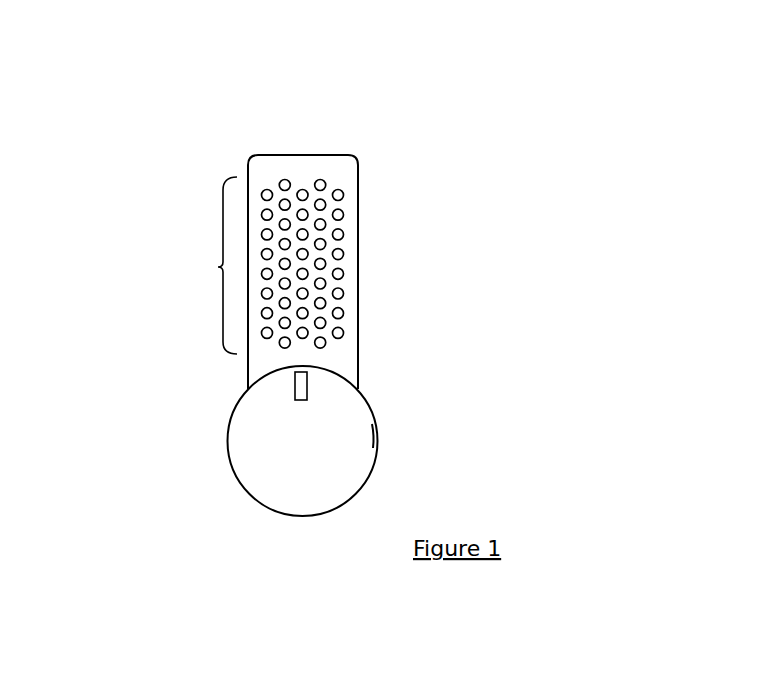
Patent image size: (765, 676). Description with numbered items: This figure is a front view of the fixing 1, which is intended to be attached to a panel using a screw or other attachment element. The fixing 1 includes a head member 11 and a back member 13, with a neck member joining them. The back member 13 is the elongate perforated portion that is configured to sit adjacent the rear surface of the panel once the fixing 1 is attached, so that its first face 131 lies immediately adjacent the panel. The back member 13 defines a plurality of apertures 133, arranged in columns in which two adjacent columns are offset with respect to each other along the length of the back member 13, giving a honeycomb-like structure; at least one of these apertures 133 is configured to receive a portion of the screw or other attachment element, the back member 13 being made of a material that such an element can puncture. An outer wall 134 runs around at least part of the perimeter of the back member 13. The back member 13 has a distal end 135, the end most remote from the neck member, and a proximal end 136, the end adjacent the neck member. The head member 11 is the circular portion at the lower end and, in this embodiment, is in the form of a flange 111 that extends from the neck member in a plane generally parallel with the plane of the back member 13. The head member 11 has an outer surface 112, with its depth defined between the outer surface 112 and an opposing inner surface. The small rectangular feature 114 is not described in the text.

The fixing 1 is at (164, 118).
The head member 11 is at (255, 423).
The flange 111 is at (373, 435).
The outer surface 112 is at (288, 459).
The slot 114 is at (305, 383).
The back member 13 is at (340, 168).
The first face 131 is at (259, 208).
The apertures 133 is at (218, 267).
The outer wall 134 is at (302, 164).
The distal end 135 is at (361, 124).
The proximal end 136 is at (407, 472).